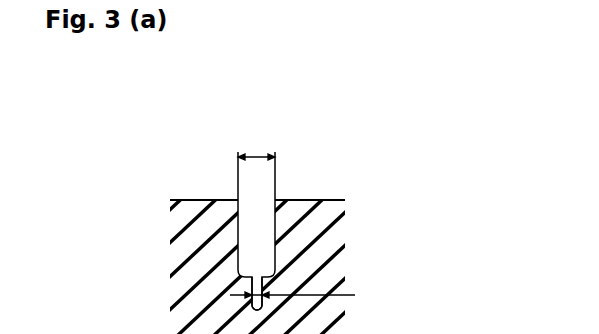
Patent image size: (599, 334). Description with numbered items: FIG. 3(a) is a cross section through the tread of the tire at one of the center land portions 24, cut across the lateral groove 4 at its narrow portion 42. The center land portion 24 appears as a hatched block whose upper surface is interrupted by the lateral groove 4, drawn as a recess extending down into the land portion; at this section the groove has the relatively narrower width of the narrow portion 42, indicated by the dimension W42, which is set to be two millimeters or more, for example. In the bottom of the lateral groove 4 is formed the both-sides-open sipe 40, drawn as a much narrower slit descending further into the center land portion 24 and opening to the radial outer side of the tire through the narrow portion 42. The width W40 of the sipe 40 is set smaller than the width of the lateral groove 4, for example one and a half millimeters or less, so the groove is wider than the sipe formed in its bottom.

The center land portion 24 is at (310, 198).
The narrow portion 42 is at (258, 206).
The both-sides-open sipe 40 is at (263, 300).
The lateral groove 4 is at (256, 263).
The width of the narrow portion W42 is at (258, 155).
The width of the sipe W40 is at (314, 298).